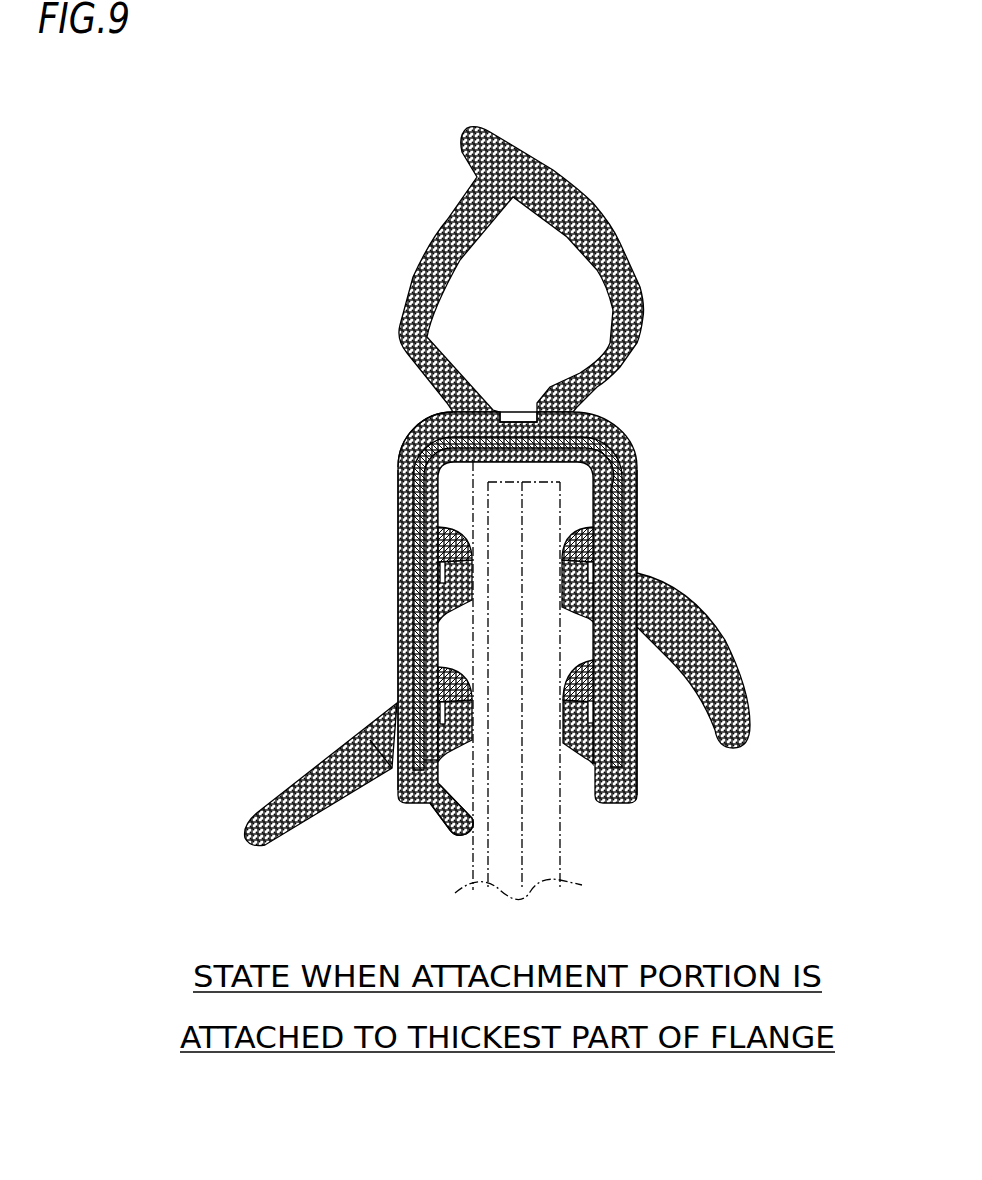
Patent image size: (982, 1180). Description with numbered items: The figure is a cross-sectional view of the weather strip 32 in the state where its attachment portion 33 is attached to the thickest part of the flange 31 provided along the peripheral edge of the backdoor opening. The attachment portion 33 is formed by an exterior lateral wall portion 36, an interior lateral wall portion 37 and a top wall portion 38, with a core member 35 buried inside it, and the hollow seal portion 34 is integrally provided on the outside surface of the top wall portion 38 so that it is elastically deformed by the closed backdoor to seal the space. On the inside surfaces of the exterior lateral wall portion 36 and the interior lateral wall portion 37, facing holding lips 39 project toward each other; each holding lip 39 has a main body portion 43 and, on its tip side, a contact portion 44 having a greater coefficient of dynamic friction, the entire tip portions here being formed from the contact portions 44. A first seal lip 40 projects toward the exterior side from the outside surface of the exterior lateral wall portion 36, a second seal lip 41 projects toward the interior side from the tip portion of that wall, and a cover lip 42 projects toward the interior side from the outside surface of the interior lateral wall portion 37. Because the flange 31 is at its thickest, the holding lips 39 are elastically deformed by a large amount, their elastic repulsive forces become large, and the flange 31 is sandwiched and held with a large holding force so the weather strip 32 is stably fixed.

The flange 31 is at (560, 840).
The weather strip 32 is at (398, 467).
The attachment portion 33 is at (422, 433).
The hollow seal portion 34 is at (603, 222).
The core member 35 is at (635, 745).
The exterior lateral wall portion 36 is at (398, 593).
The interior lateral wall portion 37 is at (637, 510).
The top wall portion 38 is at (527, 420).
The holding lips 39 is at (472, 578).
The first seal lip 40 is at (290, 784).
The second seal lip 41 is at (447, 817).
The cover lip 42 is at (727, 628).
The main body portions 43 is at (398, 568).
The contact portions 44 is at (398, 519).